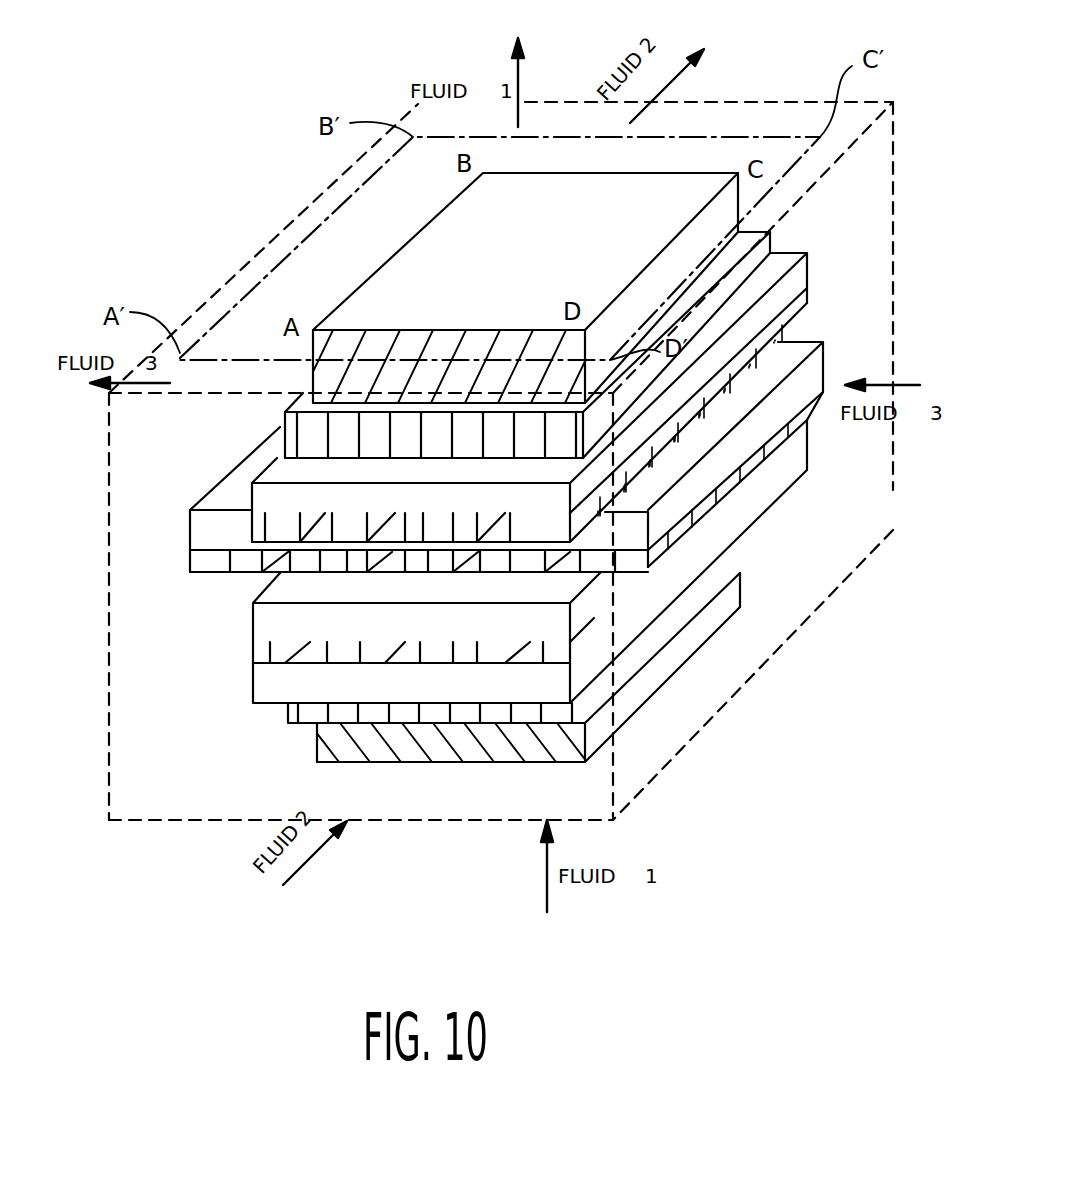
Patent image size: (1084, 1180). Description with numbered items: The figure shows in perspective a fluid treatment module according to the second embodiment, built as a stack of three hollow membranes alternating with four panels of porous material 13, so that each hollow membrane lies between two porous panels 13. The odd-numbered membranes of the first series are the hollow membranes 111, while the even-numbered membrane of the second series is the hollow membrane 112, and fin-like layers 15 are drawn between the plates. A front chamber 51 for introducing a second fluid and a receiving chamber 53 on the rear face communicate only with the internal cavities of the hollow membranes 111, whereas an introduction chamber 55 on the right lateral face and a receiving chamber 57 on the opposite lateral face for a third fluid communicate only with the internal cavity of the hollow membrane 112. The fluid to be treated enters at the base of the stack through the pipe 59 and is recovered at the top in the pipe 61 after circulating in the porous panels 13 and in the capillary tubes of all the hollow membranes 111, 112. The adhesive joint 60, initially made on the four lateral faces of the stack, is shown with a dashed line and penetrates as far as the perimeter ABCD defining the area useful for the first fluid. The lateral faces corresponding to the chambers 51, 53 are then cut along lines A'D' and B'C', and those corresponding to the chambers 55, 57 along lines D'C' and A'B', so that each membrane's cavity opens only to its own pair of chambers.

The panel of porous material 13 is at (203, 523).
The fin layer 15 is at (764, 250).
The front chamber 51 is at (483, 785).
The receiving chamber 53 is at (680, 160).
The introduction chamber 55 is at (797, 520).
The receiving chamber 57 is at (247, 402).
The pipe 59 is at (577, 767).
The adhesive joint 60 is at (760, 667).
The pipe 61 is at (390, 268).
The hollow membrane of the first series 111 is at (807, 317).
The hollow membrane of the second series 112 is at (190, 560).